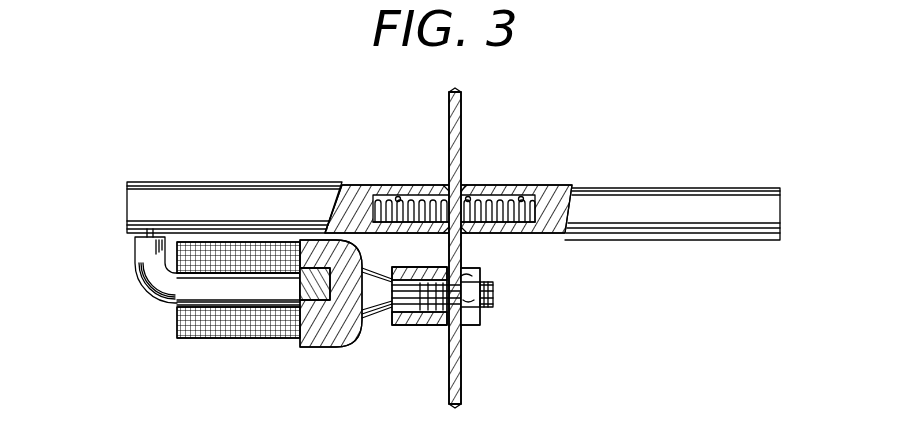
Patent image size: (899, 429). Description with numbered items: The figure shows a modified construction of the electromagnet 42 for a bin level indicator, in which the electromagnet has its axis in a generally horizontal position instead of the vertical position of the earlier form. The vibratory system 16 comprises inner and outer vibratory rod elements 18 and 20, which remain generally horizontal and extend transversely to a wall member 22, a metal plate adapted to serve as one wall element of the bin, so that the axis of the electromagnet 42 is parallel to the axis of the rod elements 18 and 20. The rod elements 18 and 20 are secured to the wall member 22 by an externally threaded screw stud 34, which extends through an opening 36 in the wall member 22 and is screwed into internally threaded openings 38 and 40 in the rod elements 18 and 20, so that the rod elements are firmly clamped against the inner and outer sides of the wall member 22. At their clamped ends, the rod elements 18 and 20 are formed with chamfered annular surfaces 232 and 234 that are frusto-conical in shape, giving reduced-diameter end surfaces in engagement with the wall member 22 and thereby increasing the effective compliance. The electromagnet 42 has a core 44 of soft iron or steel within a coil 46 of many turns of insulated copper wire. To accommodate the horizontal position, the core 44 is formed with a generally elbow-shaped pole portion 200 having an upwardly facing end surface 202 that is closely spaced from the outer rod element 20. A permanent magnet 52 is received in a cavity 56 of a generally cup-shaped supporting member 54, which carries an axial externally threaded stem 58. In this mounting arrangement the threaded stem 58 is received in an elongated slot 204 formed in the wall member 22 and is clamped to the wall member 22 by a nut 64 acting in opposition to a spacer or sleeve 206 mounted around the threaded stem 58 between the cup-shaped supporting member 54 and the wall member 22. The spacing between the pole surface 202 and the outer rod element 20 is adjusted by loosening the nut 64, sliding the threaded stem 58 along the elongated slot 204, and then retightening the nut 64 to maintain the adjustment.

The vibratory system 16 is at (721, 173).
The inner vibratory element 18 is at (627, 200).
The outer vibratory element 20 is at (268, 182).
The wall member 22 is at (449, 112).
The screw stud 34 is at (545, 233).
The opening 36 is at (468, 198).
The internally threaded opening 38 is at (521, 197).
The internally threaded opening 40 is at (400, 186).
The electromagnet 42 is at (186, 353).
The core 44 is at (240, 287).
The coil 46 is at (212, 338).
The permanent magnet 52 is at (313, 320).
The cup-shaped supporting member 54 is at (356, 340).
The cavity 56 is at (332, 325).
The threaded stem 58 is at (490, 302).
The nut 64 is at (470, 325).
The elbow-shaped pole portion 200 is at (148, 292).
The end surface 202 is at (130, 222).
The elongated slot 204 is at (494, 292).
The spacer or sleeve 206 is at (408, 325).
The annular surface 232 is at (462, 232).
The annular surface 234 is at (447, 185).